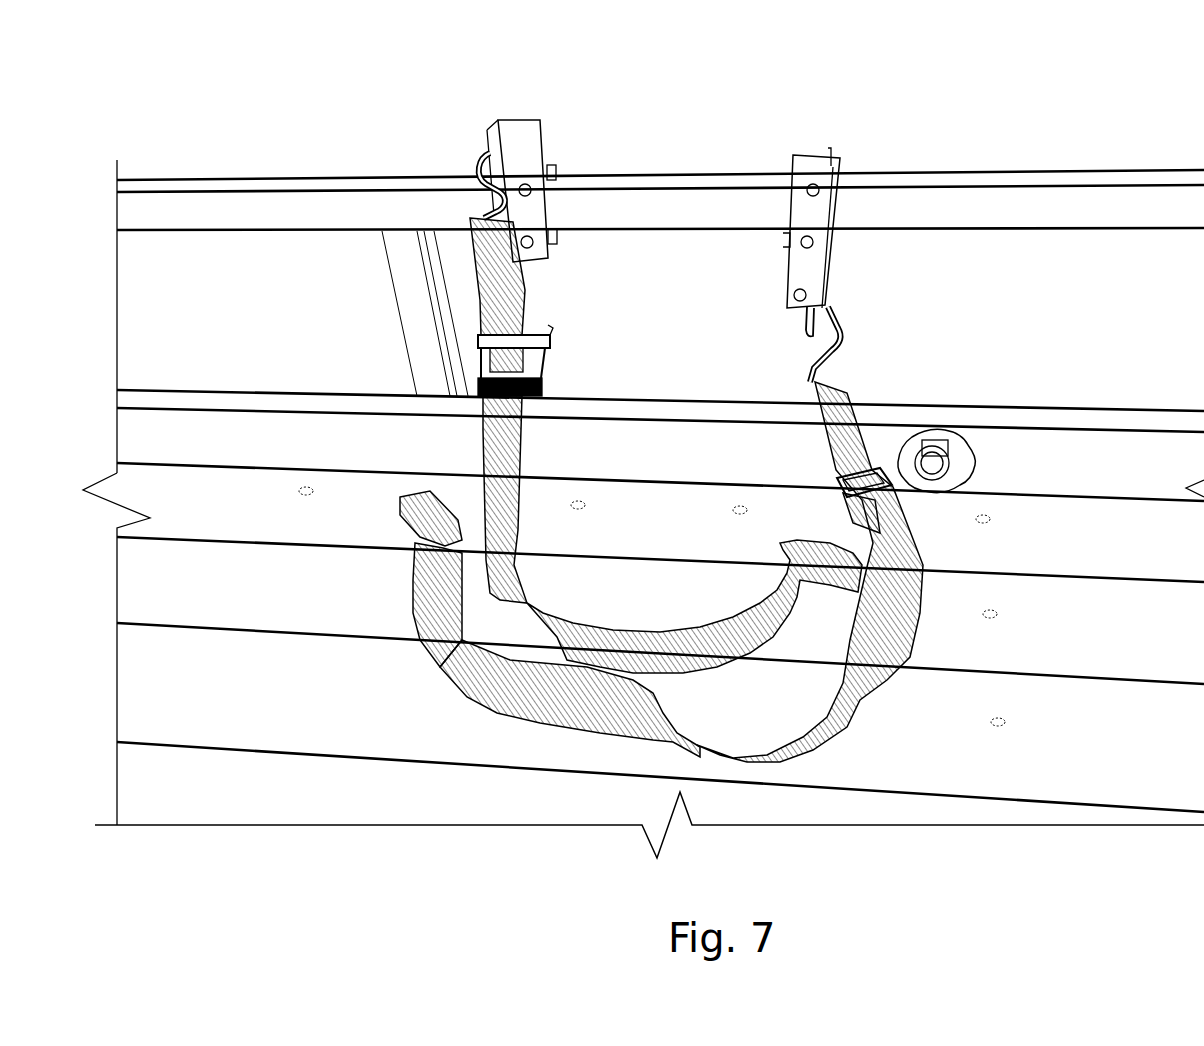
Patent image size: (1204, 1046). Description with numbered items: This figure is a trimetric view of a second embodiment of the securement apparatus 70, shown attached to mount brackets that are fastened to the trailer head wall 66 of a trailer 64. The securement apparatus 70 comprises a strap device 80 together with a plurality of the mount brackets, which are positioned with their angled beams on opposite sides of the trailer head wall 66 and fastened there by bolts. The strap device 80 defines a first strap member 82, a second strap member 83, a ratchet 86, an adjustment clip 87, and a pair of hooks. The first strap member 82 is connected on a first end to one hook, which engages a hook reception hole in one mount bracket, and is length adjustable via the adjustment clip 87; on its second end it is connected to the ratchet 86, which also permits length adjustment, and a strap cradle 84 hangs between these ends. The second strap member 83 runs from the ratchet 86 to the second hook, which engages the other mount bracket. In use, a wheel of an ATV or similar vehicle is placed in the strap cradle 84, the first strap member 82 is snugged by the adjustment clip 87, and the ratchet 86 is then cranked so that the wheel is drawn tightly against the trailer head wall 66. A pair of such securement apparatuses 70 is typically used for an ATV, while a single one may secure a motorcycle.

The trailer 64 is at (643, 604).
The trailer head wall 66 is at (660, 316).
The securement apparatus 70 is at (660, 410).
The strap device 80 is at (605, 624).
The first strap member 82 is at (577, 483).
The second strap member 83 is at (418, 237).
The strap cradle 84 is at (820, 572).
The ratchet 86 is at (574, 335).
The adjustment clip 87 is at (930, 515).